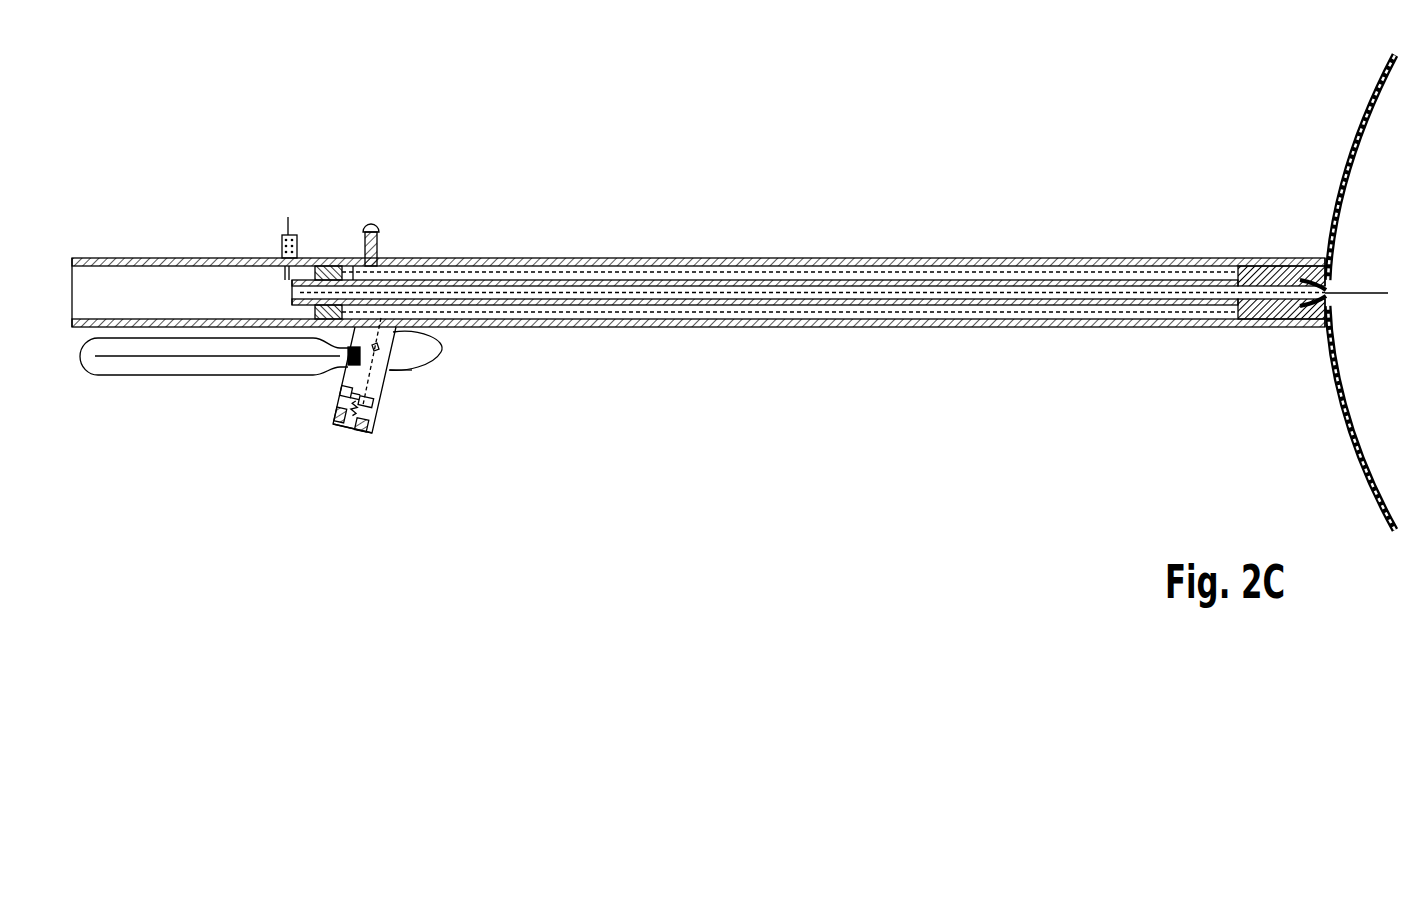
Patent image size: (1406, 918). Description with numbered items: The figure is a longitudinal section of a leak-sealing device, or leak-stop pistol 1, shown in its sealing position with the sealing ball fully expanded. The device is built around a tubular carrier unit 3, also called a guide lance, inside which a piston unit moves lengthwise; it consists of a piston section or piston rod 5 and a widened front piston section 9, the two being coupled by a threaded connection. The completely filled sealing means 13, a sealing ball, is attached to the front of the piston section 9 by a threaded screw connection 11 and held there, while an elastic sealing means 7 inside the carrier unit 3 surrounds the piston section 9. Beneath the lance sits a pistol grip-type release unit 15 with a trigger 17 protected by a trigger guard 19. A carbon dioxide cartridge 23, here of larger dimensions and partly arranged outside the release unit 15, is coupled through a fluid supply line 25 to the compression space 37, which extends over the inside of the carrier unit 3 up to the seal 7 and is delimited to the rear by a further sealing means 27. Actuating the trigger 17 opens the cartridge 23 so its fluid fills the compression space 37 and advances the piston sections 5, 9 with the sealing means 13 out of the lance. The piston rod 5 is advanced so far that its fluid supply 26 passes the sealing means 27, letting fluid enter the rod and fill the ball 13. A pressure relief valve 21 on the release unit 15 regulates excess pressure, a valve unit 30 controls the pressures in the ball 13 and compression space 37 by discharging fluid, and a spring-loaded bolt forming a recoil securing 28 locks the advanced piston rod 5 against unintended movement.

The leak-stop pistol 1 is at (930, 80).
The carrier unit 3 is at (690, 261).
The piston section 5 is at (557, 280).
The sealing means 7 is at (1253, 273).
The piston section 9 is at (1280, 322).
The threaded screw connection 11 is at (1302, 263).
The sealing means 13 is at (1360, 118).
The release unit 15 is at (383, 388).
The trigger 17 is at (416, 356).
The trigger guard 19 is at (412, 370).
The pressure relief valve 21 is at (368, 432).
The carbon dioxide cartridge 23 is at (190, 377).
The fluid supply line 25 is at (396, 335).
The fluid supply 26 is at (353, 266).
The sealing means 27 is at (317, 327).
The recoil securing 28 is at (282, 233).
The valve unit 30 is at (373, 222).
The compression space 37 is at (752, 272).